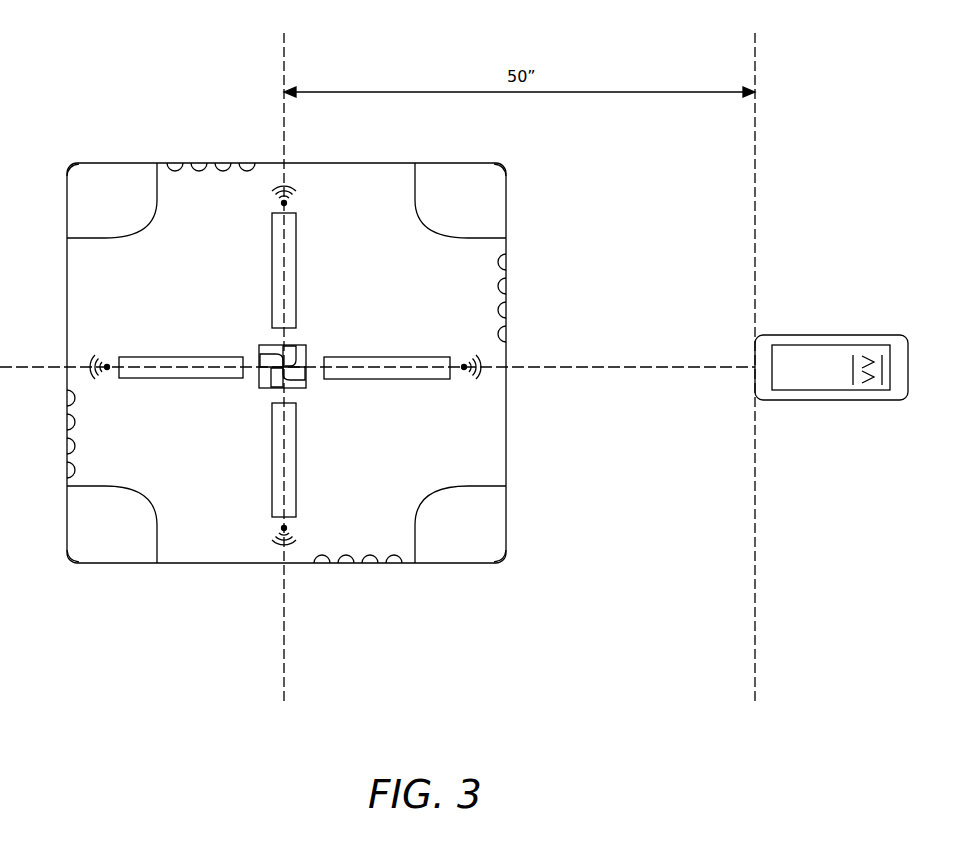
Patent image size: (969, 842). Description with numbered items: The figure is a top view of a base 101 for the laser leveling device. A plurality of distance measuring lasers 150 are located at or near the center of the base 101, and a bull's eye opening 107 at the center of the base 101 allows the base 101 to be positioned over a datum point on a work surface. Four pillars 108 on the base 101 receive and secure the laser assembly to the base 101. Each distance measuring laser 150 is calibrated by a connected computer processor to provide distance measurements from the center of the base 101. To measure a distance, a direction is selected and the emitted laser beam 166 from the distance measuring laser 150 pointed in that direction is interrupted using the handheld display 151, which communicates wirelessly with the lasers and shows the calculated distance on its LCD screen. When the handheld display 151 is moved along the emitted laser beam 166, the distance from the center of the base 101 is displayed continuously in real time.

The base 101 is at (301, 378).
The pillars 108 is at (506, 200).
The distance measuring lasers 150 is at (390, 357).
The bull's eye opening 107 is at (286, 370).
The handheld display 151 is at (815, 335).
The emitted laser beam 166 is at (575, 367).